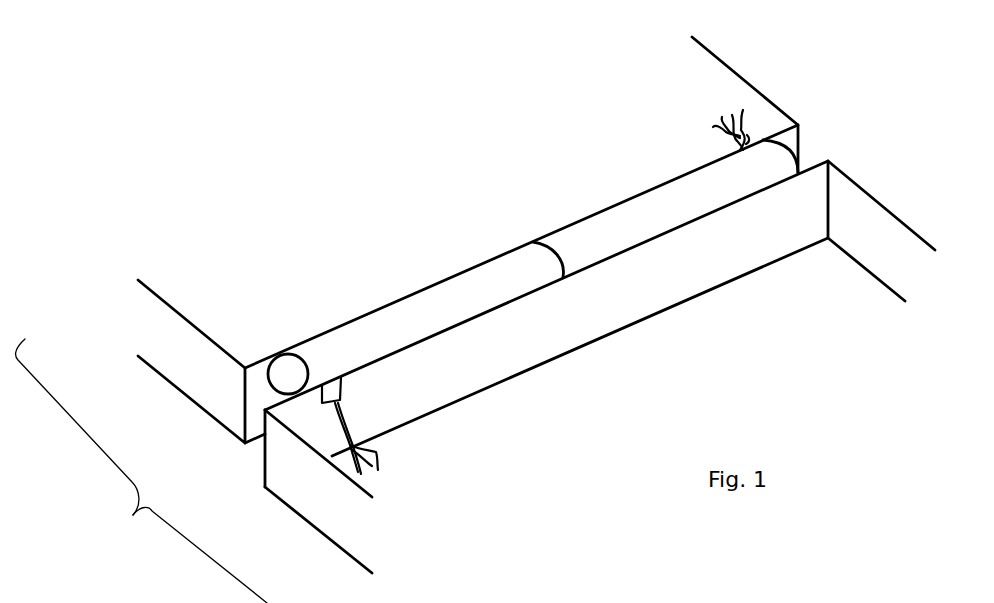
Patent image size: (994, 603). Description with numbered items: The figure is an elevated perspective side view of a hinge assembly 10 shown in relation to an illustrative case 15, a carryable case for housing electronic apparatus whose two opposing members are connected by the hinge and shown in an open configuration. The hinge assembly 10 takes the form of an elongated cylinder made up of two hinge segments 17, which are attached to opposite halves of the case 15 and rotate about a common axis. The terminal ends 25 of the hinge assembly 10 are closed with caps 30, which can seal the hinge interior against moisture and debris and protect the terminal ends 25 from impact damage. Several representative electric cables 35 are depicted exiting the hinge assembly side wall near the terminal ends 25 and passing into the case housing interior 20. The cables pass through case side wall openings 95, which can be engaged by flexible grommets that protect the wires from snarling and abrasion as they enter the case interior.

The hinge assembly 10 is at (809, 150).
The case 15 is at (141, 471).
The hinge segments 17 is at (480, 290).
The case housing interior 20 is at (386, 176).
The terminal ends 25 is at (282, 377).
The caps 30 is at (411, 543).
The electric cables 35 is at (738, 103).
The case side wall openings 95 is at (322, 395).